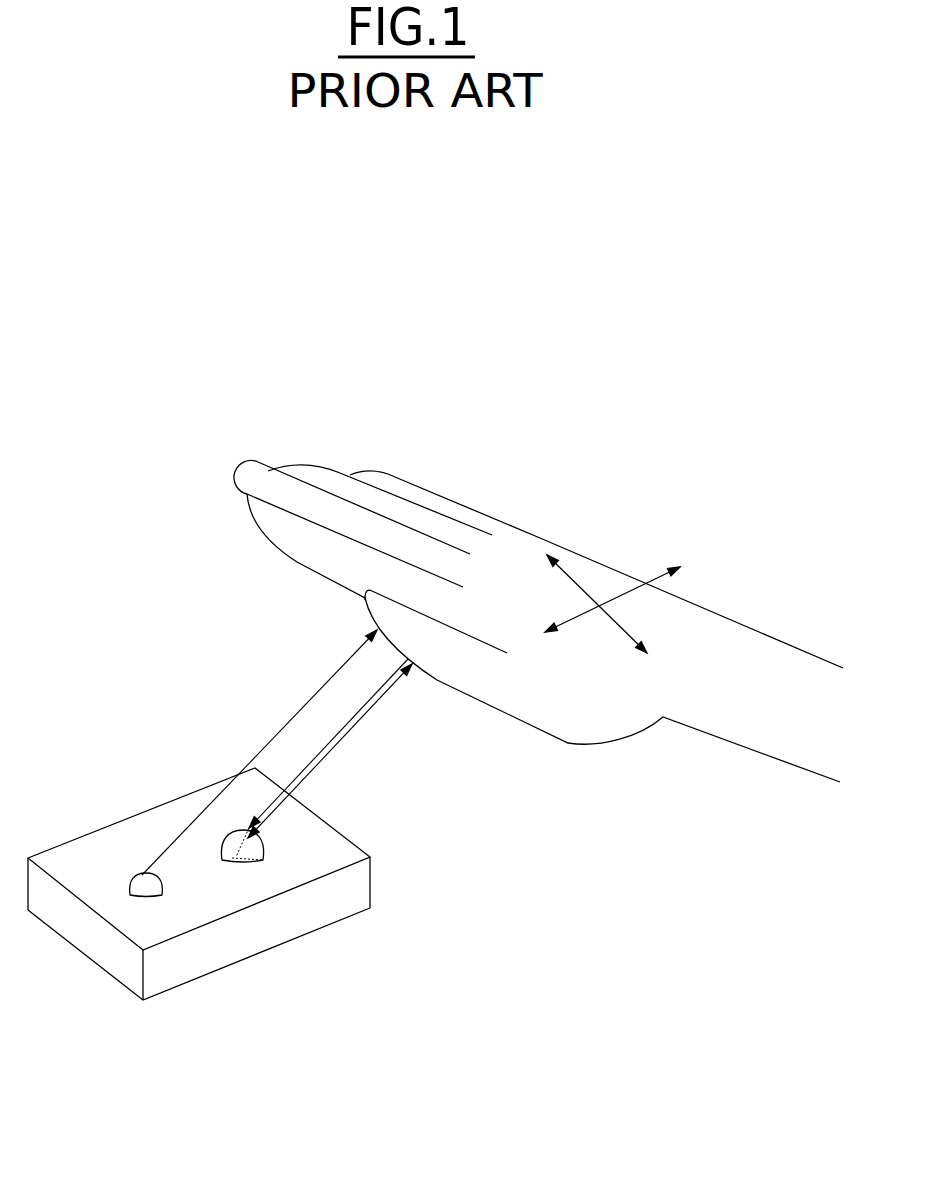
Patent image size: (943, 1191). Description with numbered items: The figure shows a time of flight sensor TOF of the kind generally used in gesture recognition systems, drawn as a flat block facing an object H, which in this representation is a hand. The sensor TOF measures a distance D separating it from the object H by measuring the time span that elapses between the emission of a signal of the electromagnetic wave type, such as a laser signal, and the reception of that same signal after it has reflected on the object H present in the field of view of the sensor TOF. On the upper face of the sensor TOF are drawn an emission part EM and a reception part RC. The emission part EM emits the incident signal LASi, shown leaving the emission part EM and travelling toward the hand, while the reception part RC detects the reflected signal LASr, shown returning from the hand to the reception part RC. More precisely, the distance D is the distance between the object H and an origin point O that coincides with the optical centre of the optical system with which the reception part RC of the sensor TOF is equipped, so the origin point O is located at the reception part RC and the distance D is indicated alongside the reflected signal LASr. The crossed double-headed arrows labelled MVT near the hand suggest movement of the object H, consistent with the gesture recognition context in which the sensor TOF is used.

The object H is at (597, 735).
The movement of the hand MVT is at (625, 592).
The time of flight sensor TOF is at (170, 980).
The emission part EM is at (135, 875).
The reception part RC is at (230, 830).
The incident signal LASi is at (270, 740).
The reflected signal LASr is at (355, 710).
The distance D is at (327, 758).
The origin point O is at (267, 855).